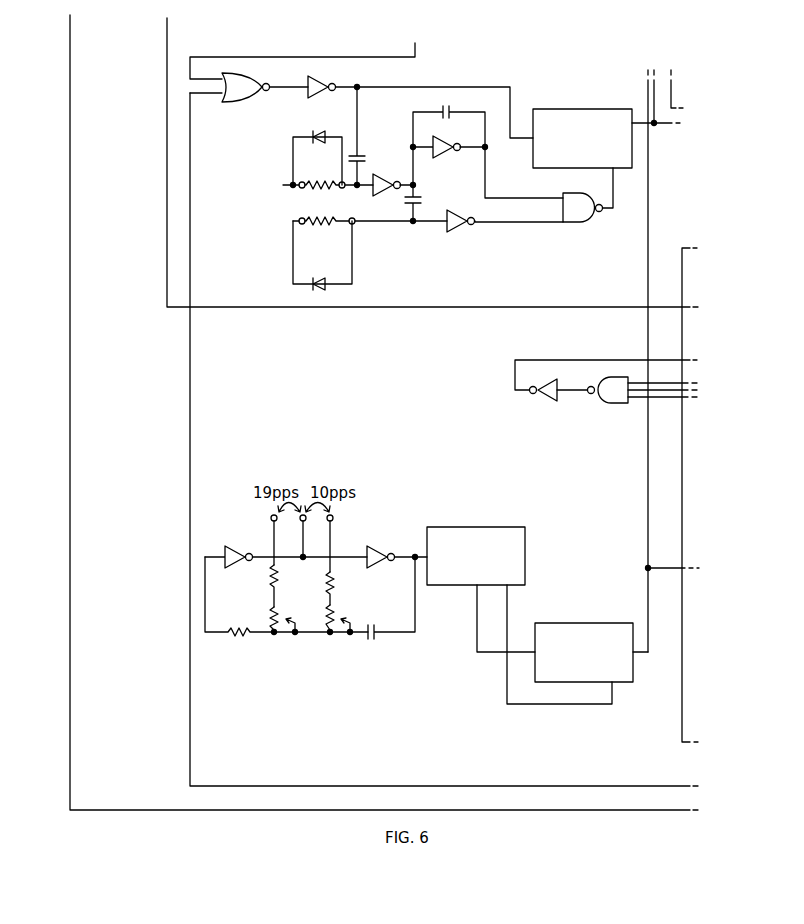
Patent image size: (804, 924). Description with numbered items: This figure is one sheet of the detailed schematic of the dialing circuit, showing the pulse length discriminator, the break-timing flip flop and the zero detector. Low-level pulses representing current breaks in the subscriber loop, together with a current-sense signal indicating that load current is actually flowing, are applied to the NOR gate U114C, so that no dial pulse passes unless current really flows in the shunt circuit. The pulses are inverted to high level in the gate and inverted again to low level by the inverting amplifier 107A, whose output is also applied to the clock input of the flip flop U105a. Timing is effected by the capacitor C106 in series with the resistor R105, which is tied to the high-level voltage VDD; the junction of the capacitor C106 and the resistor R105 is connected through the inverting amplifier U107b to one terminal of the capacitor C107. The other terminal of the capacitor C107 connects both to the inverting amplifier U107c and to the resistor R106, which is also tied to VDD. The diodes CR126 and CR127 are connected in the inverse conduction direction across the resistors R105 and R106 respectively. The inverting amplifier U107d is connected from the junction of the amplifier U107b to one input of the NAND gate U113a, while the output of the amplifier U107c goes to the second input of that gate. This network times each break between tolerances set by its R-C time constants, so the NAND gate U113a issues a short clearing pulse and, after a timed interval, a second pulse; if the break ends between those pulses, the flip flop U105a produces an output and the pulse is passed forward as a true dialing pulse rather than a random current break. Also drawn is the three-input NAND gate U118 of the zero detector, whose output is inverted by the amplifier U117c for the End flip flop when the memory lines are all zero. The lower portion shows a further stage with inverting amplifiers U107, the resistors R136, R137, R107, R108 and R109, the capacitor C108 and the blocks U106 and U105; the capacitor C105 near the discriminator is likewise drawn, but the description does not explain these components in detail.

The NOR gate U114C is at (256, 97).
The inverting amplifier 107A is at (334, 91).
The capacitor C106 is at (364, 160).
The diode CR126 is at (319, 150).
The resistor R105 is at (322, 173).
The inverting amplifier U107b is at (387, 196).
The resistor R106 is at (326, 211).
The diode CR127 is at (321, 272).
The capacitor C107 is at (428, 191).
The capacitor C105 is at (440, 108).
The inverting amplifier U107d is at (448, 129).
The flip flop U105a is at (546, 168).
The NAND gate U113a is at (566, 222).
The inverting amplifier U107c is at (466, 212).
The inverting amplifier U117c is at (545, 398).
The NAND gate U118 is at (600, 403).
The inverting amplifier U107 is at (236, 568).
The resistor R136 is at (295, 584).
The variable resistor R137 is at (265, 618).
The resistor R107 is at (352, 588).
The variable resistor R108 is at (321, 612).
The resistor R109 is at (286, 608).
The capacitor C108 is at (384, 645).
The logic block U106 is at (456, 527).
The logic block U105 is at (599, 683).